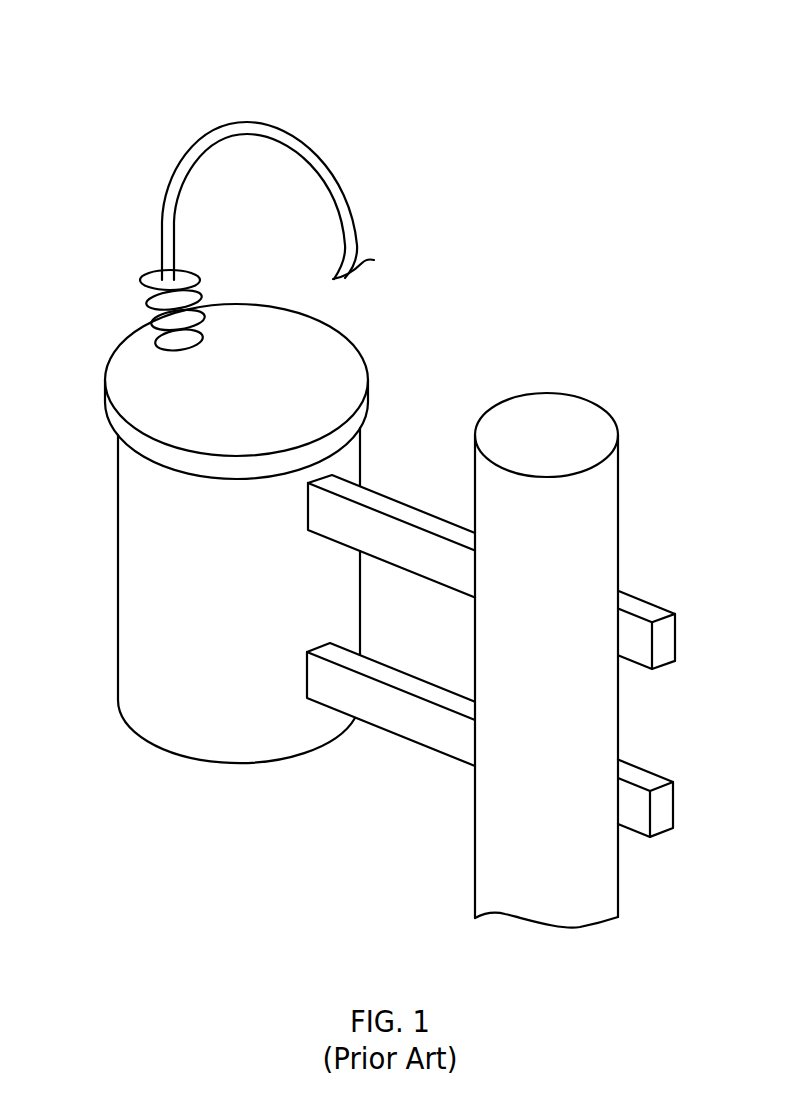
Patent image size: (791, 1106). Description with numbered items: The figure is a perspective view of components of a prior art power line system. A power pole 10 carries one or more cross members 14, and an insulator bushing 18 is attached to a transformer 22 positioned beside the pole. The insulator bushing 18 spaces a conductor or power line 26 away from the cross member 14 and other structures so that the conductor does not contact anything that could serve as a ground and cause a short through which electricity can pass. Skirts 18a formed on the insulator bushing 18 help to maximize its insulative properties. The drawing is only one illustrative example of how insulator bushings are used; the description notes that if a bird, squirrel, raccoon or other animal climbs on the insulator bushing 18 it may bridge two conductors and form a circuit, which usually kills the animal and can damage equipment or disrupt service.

The power pole 10 is at (620, 488).
The cross member 14 is at (368, 488).
The insulator bushing 18 is at (147, 308).
The skirts 18a is at (200, 303).
The transformer 22 is at (133, 568).
The conductor or power line 26 is at (245, 120).